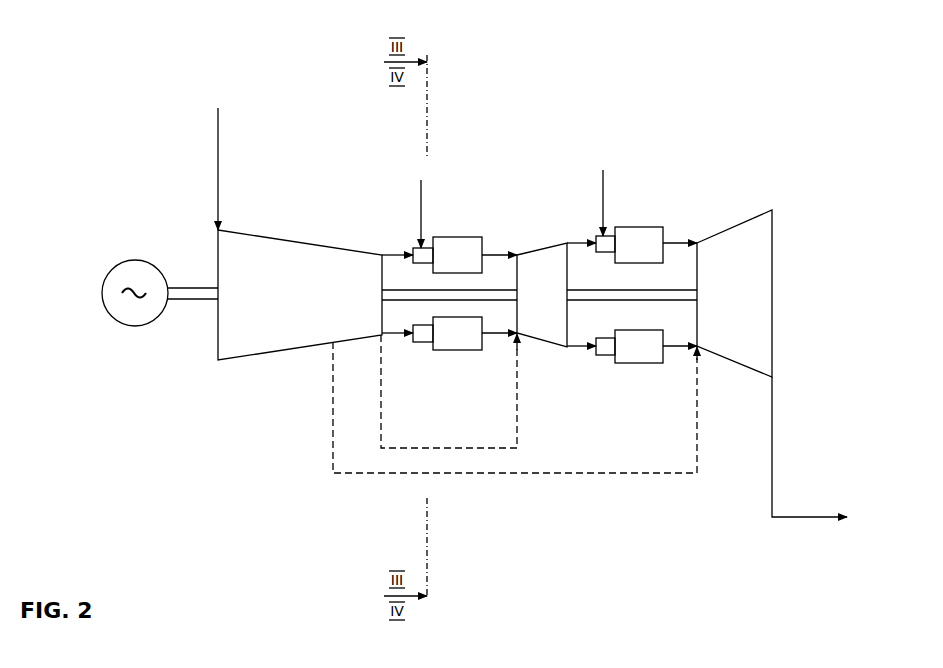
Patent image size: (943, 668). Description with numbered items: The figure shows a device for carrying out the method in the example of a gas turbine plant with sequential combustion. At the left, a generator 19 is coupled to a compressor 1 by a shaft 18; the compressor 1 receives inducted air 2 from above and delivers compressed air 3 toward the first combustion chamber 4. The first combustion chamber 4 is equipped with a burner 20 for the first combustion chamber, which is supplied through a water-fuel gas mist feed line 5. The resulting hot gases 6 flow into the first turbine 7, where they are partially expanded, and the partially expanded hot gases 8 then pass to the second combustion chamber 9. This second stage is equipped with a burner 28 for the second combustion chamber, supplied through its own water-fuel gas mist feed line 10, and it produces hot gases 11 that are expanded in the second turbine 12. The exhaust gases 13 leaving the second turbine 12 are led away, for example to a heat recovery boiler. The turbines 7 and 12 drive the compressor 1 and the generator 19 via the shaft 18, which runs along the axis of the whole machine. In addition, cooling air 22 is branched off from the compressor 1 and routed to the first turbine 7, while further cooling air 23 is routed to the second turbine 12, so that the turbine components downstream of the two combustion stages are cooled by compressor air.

The compressor 1 is at (293, 302).
The inducted air 2 is at (219, 170).
The compressed air 3 is at (397, 334).
The first combustion chamber 4 is at (458, 257).
The water-fuel gas mist feed line 5 is at (421, 212).
The hot gases 6 is at (497, 334).
The first turbine 7 is at (534, 302).
The partially expanded hot gases 8 is at (578, 347).
The second combustion chamber 9 is at (638, 247).
The water-fuel gas mist feed line 10 is at (603, 213).
The hot gases 11 is at (678, 350).
The second turbine 12 is at (721, 302).
The exhaust gases 13 is at (772, 465).
The shaft 18 is at (193, 294).
The generator 19 is at (124, 310).
The burner for the first combustion chamber 20 is at (415, 254).
The cooling air 22 is at (381, 416).
The cooling air 23 is at (699, 438).
The burner for the second combustion chamber 28 is at (603, 243).